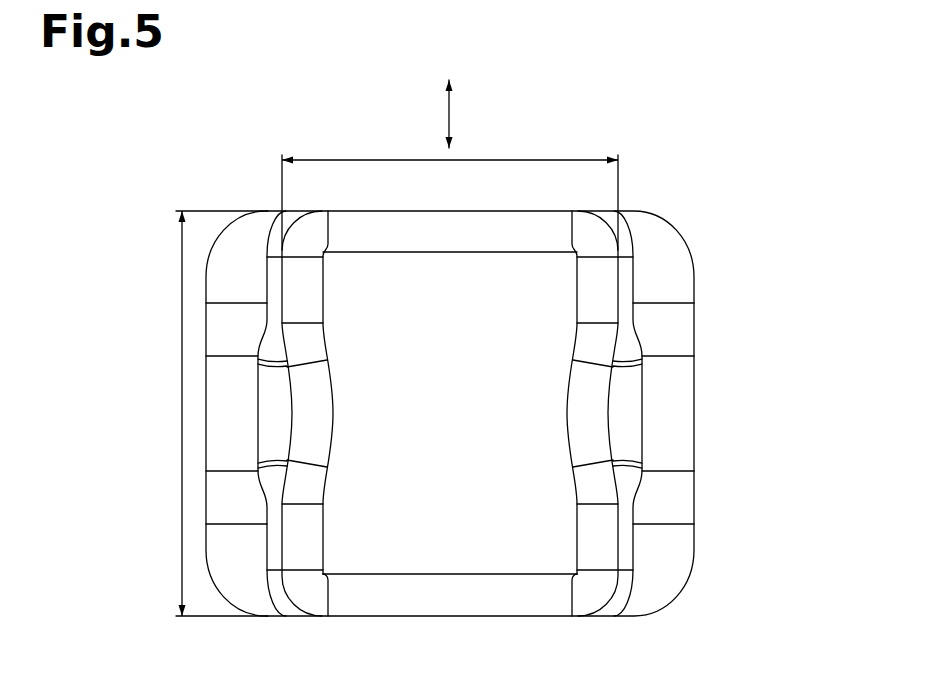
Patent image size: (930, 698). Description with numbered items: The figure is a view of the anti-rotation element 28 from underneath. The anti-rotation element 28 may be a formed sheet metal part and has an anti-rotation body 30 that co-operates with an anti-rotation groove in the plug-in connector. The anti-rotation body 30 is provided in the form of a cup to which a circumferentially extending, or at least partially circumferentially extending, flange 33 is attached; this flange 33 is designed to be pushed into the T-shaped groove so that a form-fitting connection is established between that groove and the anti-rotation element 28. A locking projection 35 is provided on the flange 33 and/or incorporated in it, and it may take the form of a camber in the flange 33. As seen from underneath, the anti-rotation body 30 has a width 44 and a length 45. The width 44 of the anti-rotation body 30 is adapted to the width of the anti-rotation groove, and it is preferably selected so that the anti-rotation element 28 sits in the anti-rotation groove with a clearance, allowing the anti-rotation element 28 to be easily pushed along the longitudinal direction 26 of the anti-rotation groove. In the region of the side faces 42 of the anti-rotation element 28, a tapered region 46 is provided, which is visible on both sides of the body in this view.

The longitudinal direction 26 is at (445, 106).
The anti-rotation element 28 is at (697, 220).
The anti-rotation body 30 is at (574, 554).
The flange 33 is at (232, 503).
The locking projection 35 is at (675, 422).
The side faces 42 is at (268, 275).
The width 44 is at (515, 158).
The length 45 is at (182, 357).
The tapered region 46 is at (288, 412).